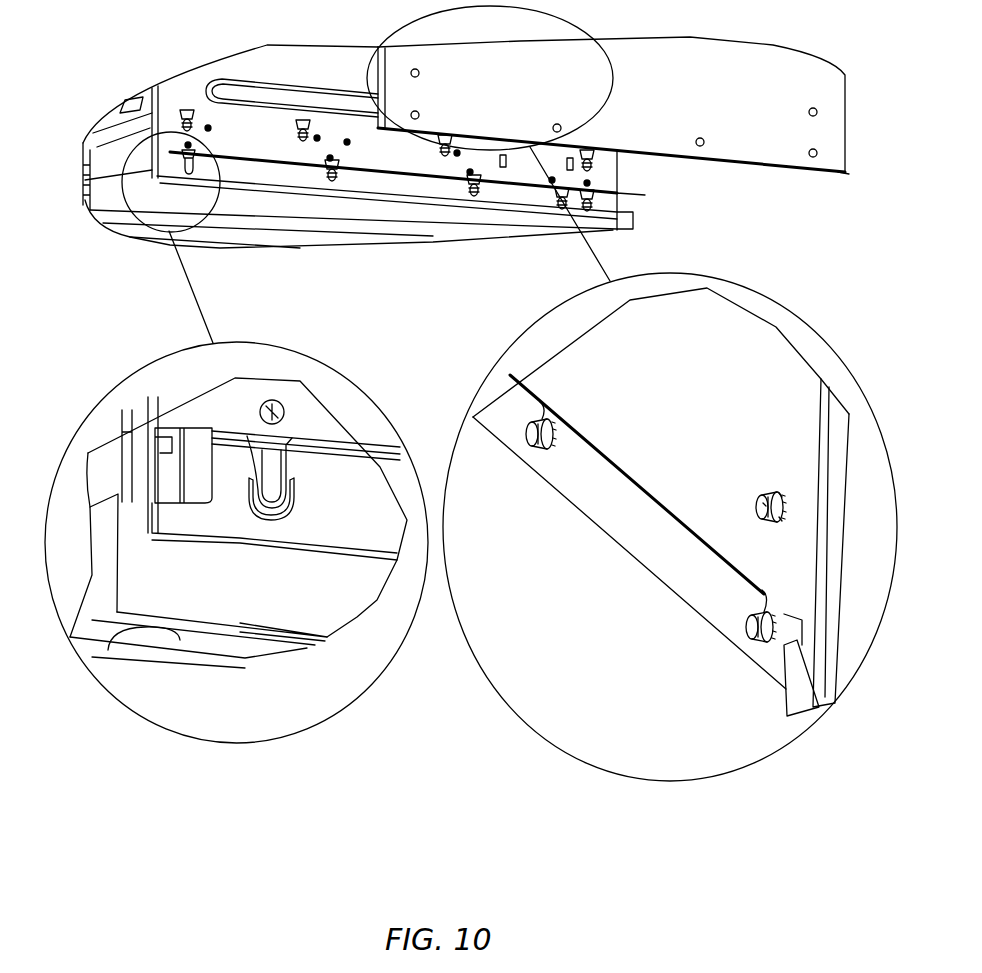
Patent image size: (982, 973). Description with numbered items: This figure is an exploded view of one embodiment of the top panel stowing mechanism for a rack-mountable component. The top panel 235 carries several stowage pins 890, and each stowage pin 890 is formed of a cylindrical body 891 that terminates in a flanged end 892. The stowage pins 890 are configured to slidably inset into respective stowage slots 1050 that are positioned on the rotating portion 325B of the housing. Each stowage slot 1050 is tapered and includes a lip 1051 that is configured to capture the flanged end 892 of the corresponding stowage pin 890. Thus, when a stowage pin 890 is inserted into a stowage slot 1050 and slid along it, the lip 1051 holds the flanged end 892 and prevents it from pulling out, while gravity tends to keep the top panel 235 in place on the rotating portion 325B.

The top panel 235 is at (753, 162).
The rotating portion 325B is at (645, 193).
The stowage pin 890 is at (697, 140).
The cylindrical body 891 is at (777, 495).
The flanged end 892 is at (763, 503).
The stowage slot 1050 is at (588, 212).
The lip 1051 is at (288, 512).